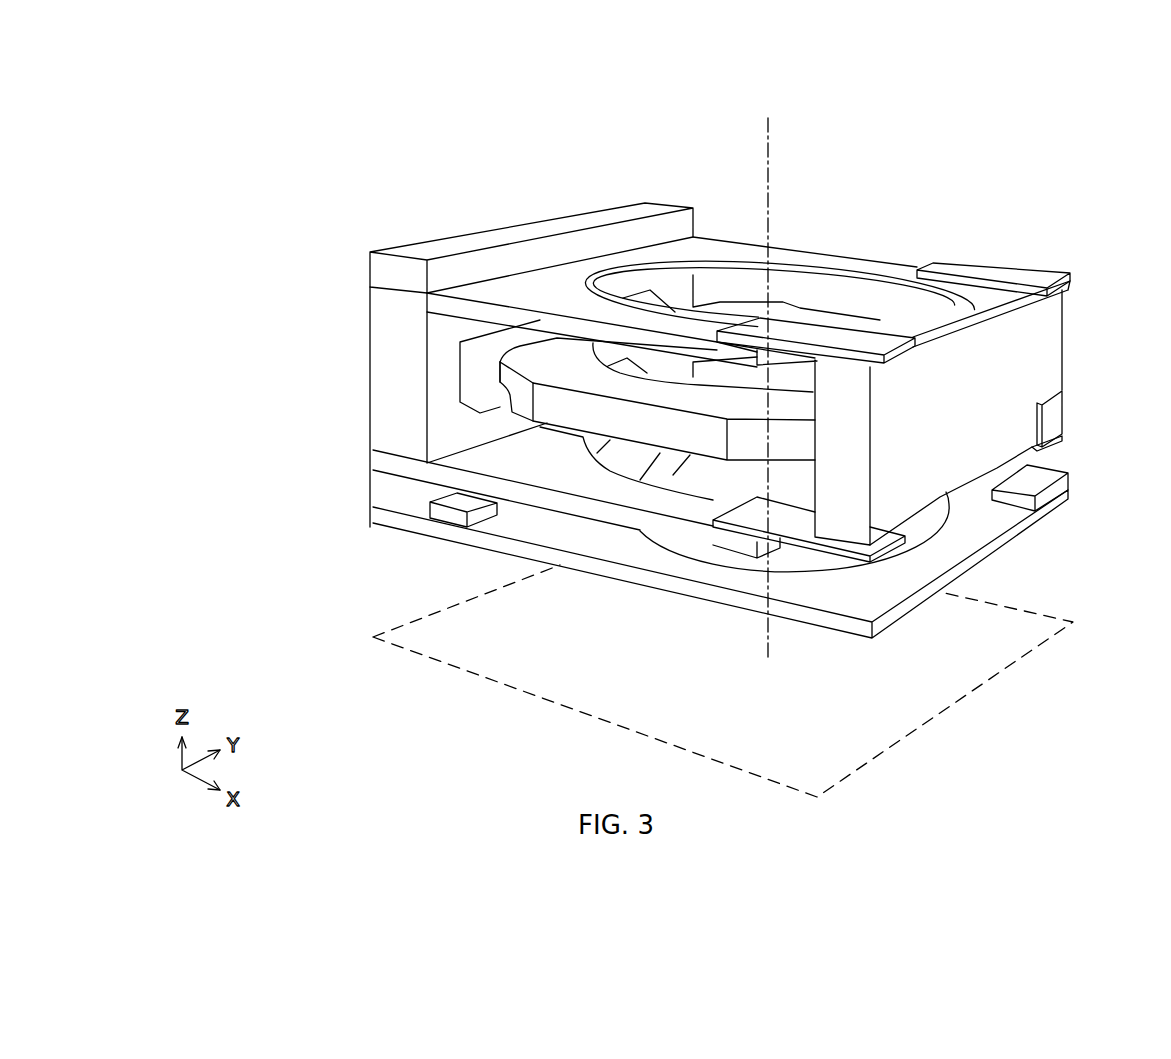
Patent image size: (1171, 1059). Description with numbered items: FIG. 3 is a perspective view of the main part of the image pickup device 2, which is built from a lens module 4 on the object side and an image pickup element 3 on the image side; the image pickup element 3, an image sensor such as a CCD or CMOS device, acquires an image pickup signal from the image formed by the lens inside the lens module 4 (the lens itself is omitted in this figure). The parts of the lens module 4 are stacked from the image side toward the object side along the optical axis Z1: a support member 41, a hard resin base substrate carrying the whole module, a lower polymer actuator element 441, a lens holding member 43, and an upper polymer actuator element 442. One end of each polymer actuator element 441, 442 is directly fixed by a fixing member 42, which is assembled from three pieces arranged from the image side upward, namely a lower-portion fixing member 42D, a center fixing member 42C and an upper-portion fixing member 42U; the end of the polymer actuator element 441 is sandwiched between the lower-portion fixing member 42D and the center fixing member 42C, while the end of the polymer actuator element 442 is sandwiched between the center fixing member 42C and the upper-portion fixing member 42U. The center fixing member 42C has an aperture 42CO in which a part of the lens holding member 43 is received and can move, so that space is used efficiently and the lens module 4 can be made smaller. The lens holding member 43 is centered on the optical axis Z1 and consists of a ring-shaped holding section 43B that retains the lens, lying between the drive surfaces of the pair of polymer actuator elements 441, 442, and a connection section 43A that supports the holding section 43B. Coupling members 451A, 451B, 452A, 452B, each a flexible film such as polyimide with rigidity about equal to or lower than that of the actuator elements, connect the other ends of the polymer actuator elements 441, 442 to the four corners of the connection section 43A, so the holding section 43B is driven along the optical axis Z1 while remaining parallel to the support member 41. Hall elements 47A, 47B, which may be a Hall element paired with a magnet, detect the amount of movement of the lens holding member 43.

The image pickup device 2 is at (484, 127).
The image pickup element 3 is at (953, 703).
The lens module 4 is at (1087, 118).
The support member 41 is at (985, 531).
The fixing member 42 is at (292, 260).
The upper-portion fixing member 42U is at (380, 272).
The center fixing member 42C is at (378, 358).
The aperture 42CO is at (478, 372).
The lower-portion fixing member 42D is at (380, 493).
The lens holding member 43 is at (973, 355).
The connection section 43A is at (1048, 318).
The holding section 43B is at (598, 413).
The polymer actuator element 441 is at (530, 468).
The polymer actuator element 442 is at (493, 293).
The coupling member 451A is at (758, 515).
The coupling member 451B is at (1065, 437).
The coupling member 452A is at (855, 343).
The coupling member 452B is at (1023, 275).
The Hall element 47A is at (1050, 477).
The Hall element 47B is at (1057, 405).
The optical axis Z1 is at (768, 373).